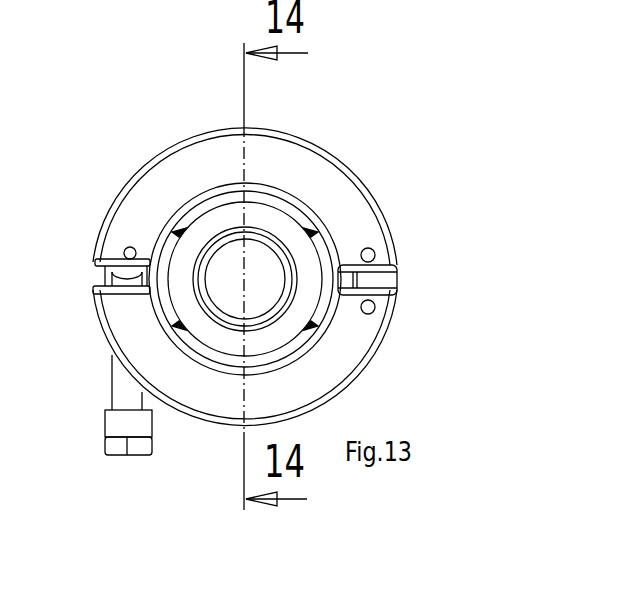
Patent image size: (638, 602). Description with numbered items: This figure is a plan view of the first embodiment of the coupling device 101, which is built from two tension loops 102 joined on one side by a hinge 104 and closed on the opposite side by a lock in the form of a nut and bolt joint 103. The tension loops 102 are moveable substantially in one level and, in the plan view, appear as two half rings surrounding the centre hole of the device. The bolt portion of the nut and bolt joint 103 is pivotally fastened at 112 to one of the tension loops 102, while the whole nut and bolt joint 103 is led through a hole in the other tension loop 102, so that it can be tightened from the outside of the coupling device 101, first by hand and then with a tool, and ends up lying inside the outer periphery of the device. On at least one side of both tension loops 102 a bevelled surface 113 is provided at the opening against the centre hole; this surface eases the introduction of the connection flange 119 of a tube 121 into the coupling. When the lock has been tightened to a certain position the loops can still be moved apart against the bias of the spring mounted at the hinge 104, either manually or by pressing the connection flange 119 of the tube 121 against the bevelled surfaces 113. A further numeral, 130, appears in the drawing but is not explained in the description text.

The coupling device 101 is at (410, 212).
The tension loop 102 is at (163, 162).
The nut and bolt joint 103 is at (122, 427).
The hinge 104 is at (377, 280).
The pivot fastening of the bolt portion 112 is at (130, 246).
The bevelled surface 113 is at (218, 197).
The connection flange 119 is at (283, 228).
The tube 121 is at (200, 317).
The shaft 130 is at (340, 594).